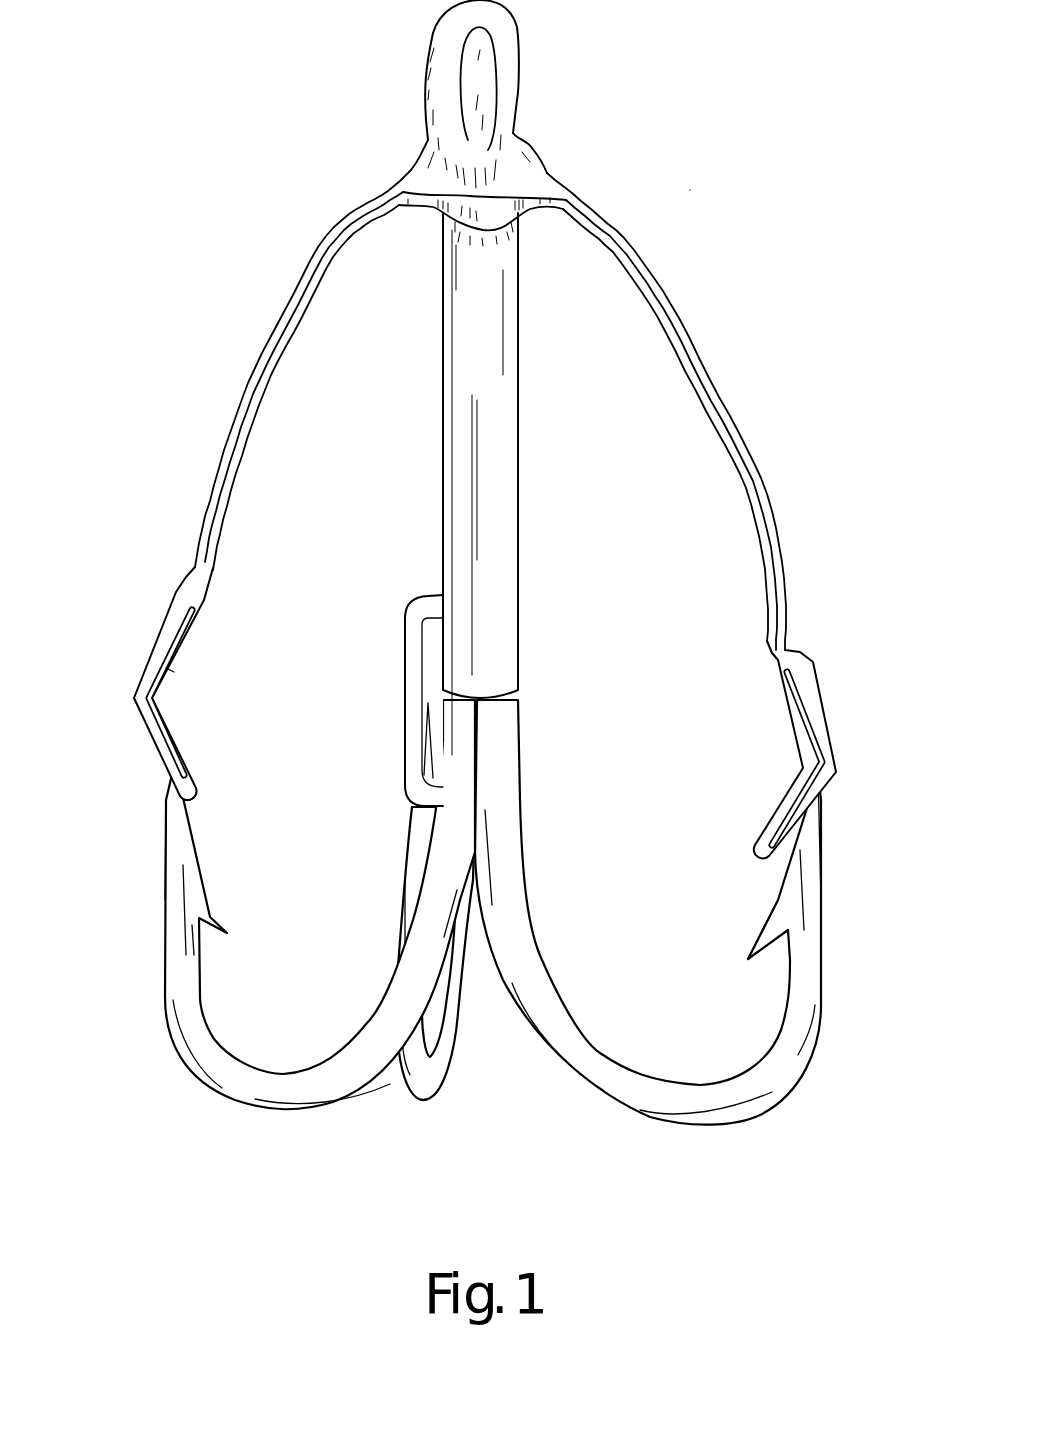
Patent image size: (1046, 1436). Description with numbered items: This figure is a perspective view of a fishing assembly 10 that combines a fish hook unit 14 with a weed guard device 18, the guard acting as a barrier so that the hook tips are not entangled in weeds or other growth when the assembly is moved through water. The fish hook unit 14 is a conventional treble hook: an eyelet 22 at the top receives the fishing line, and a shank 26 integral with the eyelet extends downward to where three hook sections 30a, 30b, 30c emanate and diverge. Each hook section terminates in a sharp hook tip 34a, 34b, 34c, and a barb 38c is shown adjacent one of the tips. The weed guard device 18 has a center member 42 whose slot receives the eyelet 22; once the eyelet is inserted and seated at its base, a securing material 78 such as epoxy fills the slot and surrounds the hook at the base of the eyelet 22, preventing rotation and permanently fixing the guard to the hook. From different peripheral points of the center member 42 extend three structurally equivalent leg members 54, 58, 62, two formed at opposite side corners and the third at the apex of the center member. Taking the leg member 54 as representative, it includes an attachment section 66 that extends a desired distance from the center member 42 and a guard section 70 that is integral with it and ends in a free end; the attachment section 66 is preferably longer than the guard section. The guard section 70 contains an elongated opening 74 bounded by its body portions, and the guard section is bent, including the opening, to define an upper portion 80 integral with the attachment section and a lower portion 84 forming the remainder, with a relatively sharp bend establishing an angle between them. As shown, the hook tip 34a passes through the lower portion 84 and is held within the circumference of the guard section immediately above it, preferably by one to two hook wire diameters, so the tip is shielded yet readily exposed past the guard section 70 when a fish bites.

The fishing assembly 10 is at (692, 188).
The fish hook unit 14 is at (522, 560).
The weed guard device 18 is at (735, 405).
The eyelet 22 is at (505, 75).
The shank 26 is at (500, 634).
The hook section 30a is at (232, 1098).
The hook section 30b is at (433, 1100).
The hook section 30c is at (740, 1100).
The hook tip 34a is at (190, 815).
The hook tip 34b is at (430, 765).
The hook tip 34c is at (818, 832).
The barb 38c is at (755, 955).
The center member 42 is at (447, 217).
The leg member 54 is at (283, 291).
The leg member 58 is at (435, 577).
The leg member 62 is at (675, 305).
The attachment section 66 is at (270, 343).
The guard section 70 is at (176, 590).
The elongated opening 74 is at (170, 648).
The securing material 78 is at (485, 182).
The upper portion 80 is at (185, 670).
The lower portion 84 is at (210, 757).